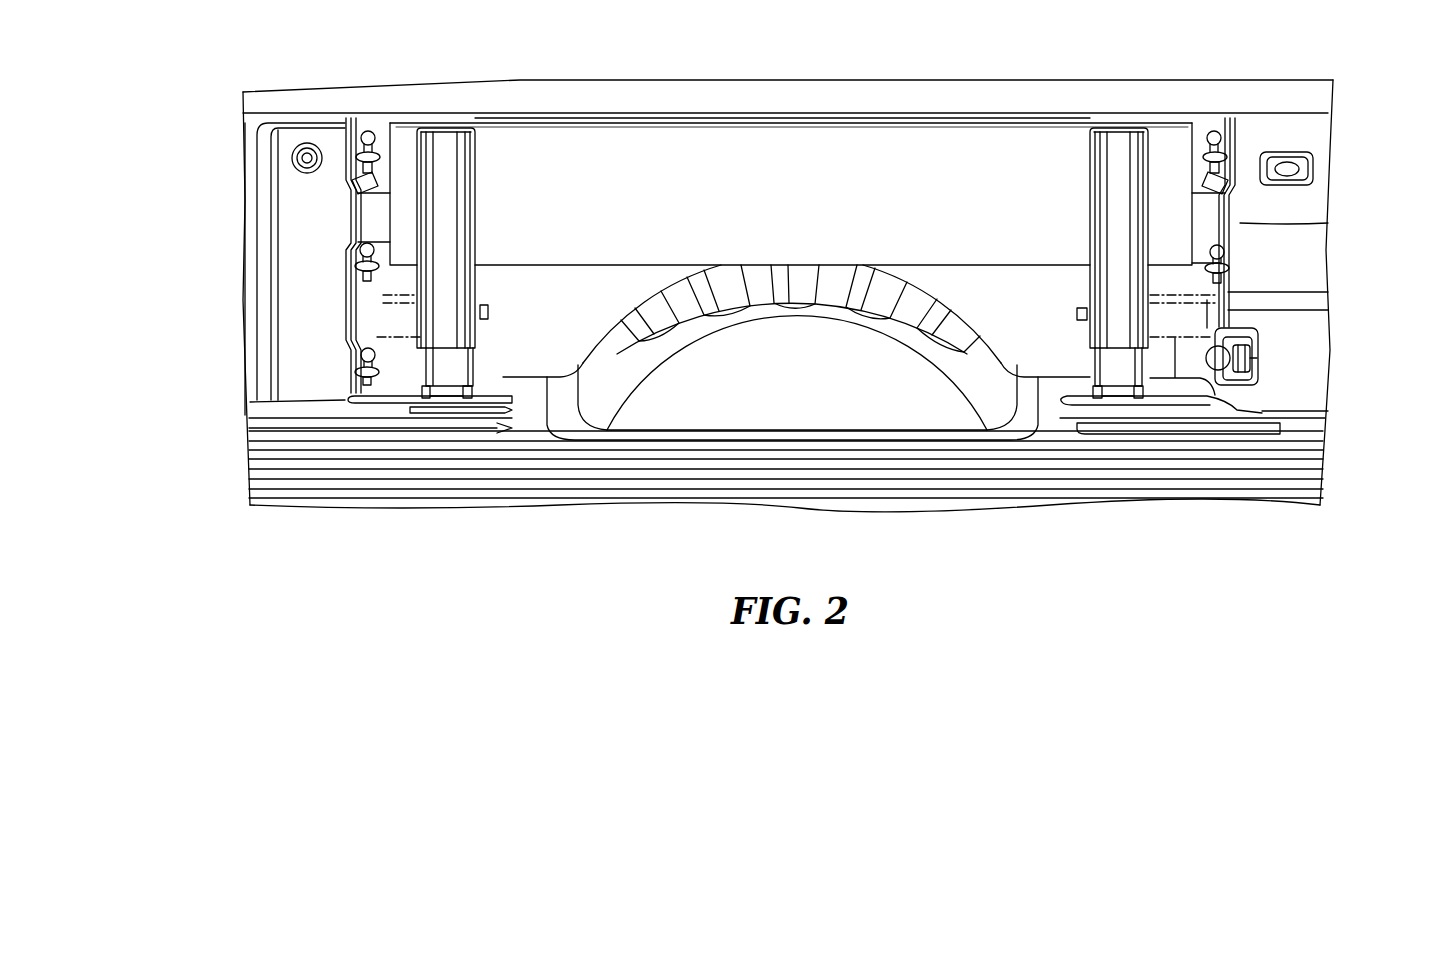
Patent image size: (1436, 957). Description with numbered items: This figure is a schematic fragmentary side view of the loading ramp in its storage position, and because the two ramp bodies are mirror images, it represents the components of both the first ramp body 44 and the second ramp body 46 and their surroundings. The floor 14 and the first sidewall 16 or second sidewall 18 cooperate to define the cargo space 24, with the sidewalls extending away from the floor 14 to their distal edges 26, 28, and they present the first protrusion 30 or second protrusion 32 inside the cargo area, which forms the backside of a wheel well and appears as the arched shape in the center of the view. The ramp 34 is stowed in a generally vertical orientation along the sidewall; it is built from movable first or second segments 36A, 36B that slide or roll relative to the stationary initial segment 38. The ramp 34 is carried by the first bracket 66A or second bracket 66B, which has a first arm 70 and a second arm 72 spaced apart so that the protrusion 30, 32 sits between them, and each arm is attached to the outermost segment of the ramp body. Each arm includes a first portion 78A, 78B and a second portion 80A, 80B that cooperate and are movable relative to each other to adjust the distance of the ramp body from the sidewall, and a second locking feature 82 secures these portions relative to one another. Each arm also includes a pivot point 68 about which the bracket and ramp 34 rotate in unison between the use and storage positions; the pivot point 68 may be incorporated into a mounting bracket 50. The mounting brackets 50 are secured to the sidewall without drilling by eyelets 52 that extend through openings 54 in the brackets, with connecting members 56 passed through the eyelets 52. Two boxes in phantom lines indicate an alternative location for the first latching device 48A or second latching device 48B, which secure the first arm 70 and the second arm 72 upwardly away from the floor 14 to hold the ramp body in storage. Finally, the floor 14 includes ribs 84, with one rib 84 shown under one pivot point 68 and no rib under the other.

The floor 14 is at (305, 500).
The first sidewall 16 is at (823, 253).
The second sidewall 18 is at (1300, 135).
The cargo space 24 is at (945, 494).
The distal edge 26 is at (785, 73).
The distal edge 28 is at (693, 98).
The first protrusion 30 is at (792, 408).
The second protrusion 32 is at (657, 410).
The ramp 34 is at (963, 142).
The first segment 36A is at (792, 79).
The second segment 36B is at (792, 79).
The initial segment 38 is at (567, 147).
The first ramp body 44 is at (791, 91).
The second ramp body 46 is at (828, 148).
The first latching device 48A is at (783, 349).
The second latching device 48B is at (370, 218).
The mounting bracket 50 is at (383, 400).
The eyelet 52 is at (353, 278).
The opening 54 is at (355, 150).
The connecting member 56 is at (372, 140).
The first bracket 66A is at (787, 278).
The second bracket 66B is at (480, 335).
The pivot point 68 is at (485, 383).
The first arm 70 is at (1144, 128).
The second arm 72 is at (444, 130).
The first portion 78A is at (782, 240).
The first portion 78B is at (485, 235).
The second portion 80A is at (649, 368).
The second portion 80B is at (430, 368).
The second locking feature 82 is at (497, 270).
The rib 84 is at (484, 410).